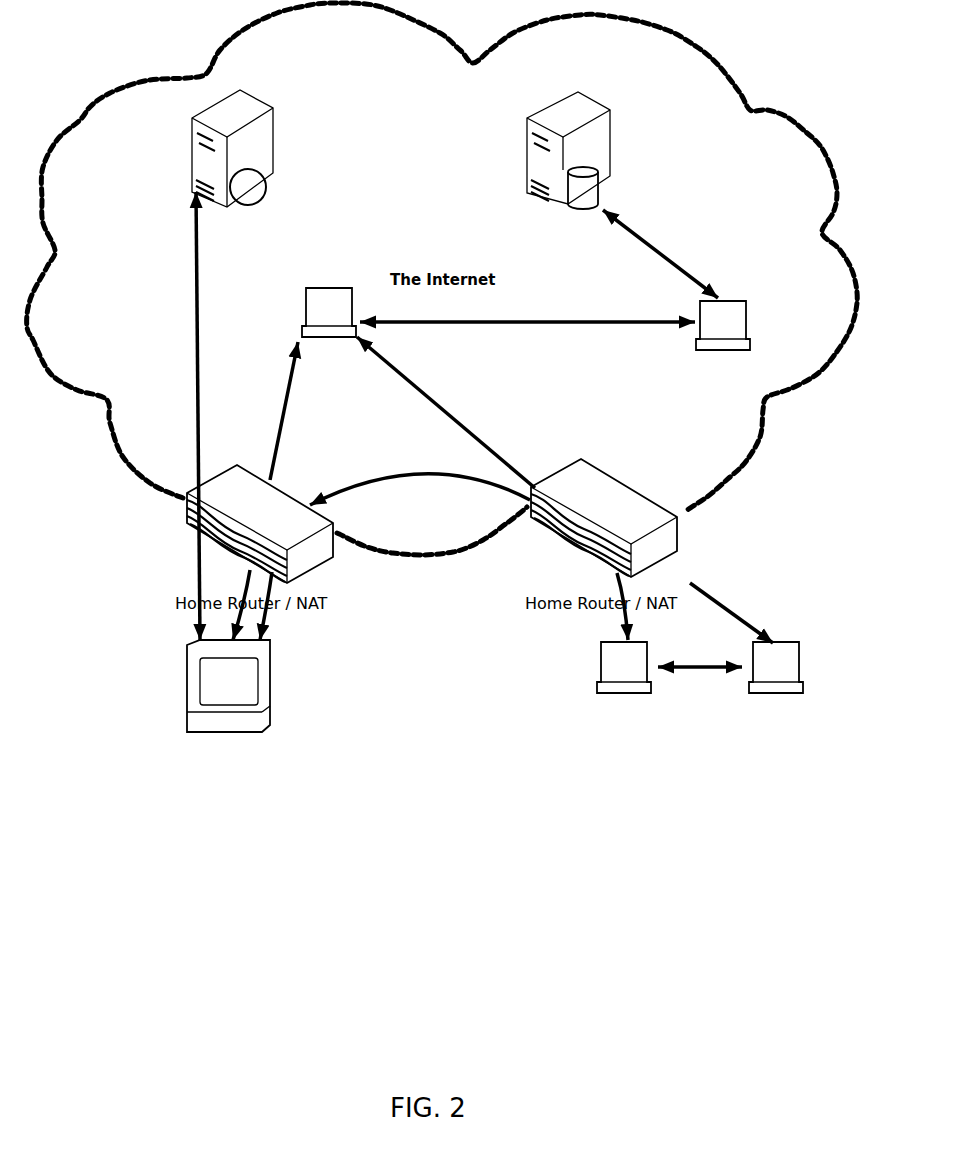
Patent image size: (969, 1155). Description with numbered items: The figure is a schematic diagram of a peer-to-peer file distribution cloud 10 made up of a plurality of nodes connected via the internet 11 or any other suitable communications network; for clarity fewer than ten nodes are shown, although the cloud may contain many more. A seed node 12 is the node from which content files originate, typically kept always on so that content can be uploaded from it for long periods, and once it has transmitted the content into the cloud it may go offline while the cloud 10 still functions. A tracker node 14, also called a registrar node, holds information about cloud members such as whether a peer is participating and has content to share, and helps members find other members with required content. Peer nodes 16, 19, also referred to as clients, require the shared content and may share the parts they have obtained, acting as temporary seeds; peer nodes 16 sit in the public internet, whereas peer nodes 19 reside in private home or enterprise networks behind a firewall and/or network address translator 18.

The peer-to-peer file distribution cloud 10 is at (86, 431).
The internet 11 is at (90, 107).
The seed node 12 is at (192, 157).
The tracker node 14 is at (525, 149).
The peer node 16 is at (328, 286).
The network address translator 18 is at (283, 490).
The peer node 19 is at (272, 671).